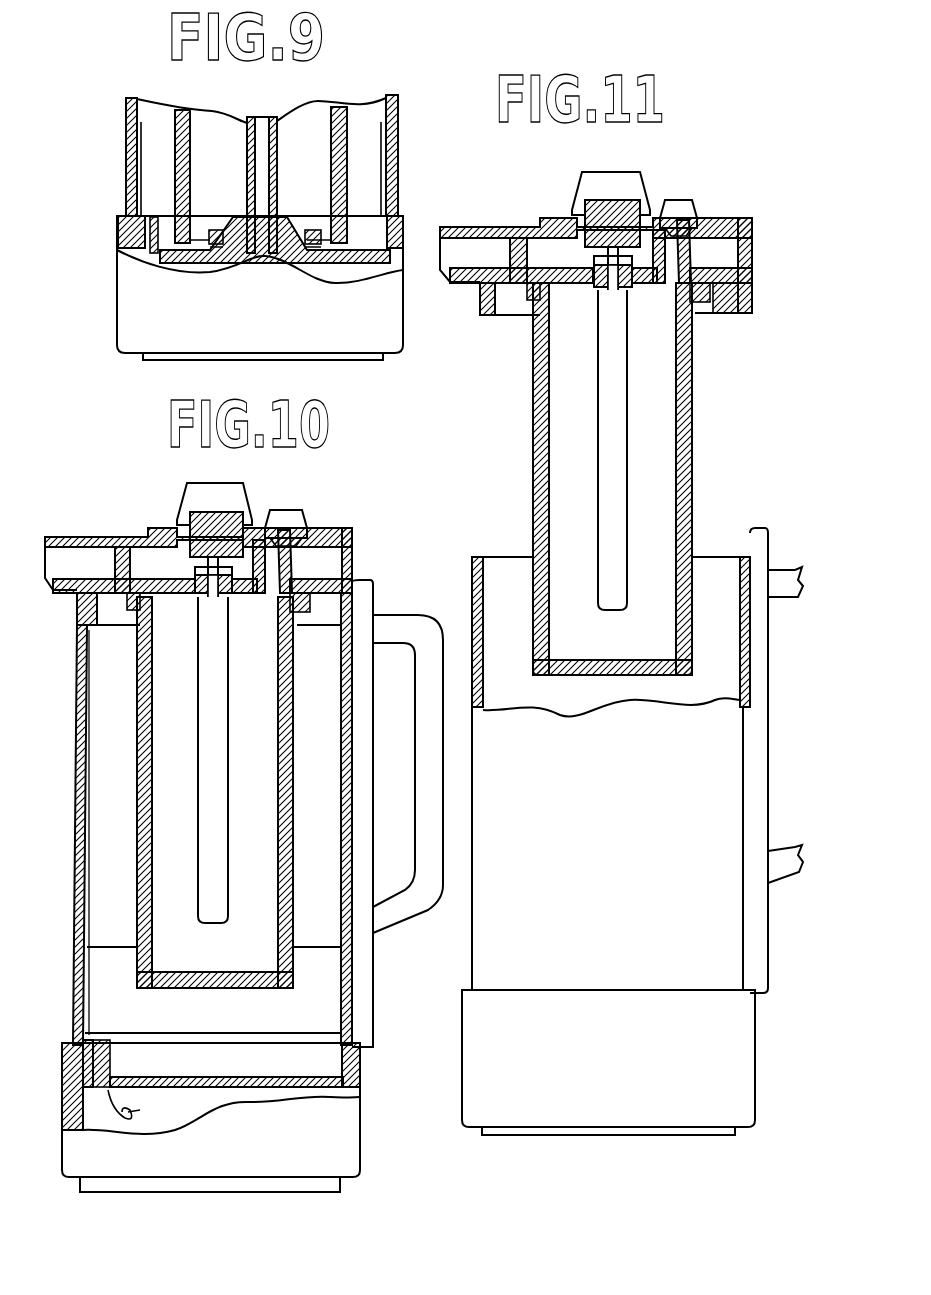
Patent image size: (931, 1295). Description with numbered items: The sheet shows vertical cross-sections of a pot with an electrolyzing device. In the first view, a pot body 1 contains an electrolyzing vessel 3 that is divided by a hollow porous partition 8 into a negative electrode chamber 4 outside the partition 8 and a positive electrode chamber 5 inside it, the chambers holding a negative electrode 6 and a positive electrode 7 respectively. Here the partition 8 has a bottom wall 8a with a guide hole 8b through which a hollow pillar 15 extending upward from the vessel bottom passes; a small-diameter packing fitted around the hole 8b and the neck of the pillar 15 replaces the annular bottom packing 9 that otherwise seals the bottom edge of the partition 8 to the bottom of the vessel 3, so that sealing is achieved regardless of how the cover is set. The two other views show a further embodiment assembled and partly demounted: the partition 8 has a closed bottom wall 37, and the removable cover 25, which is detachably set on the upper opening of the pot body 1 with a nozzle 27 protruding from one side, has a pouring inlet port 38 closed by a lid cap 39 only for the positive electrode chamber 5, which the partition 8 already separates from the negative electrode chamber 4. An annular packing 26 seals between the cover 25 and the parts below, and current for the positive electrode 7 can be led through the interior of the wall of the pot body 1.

In FIG. 9, the pot body 1 is at (127, 152).
In FIG. 10, the pot body 1 is at (78, 812).
In FIG. 11, the pot body 1 is at (750, 670).
In FIG. 10, the electrolyzing vessel 3 is at (331, 727).
In FIG. 11, the electrolyzing vessel 3 is at (728, 455).
In FIG. 10, the negative electrode chamber 4 is at (327, 833).
In FIG. 10, the positive electrode chamber 5 is at (259, 833).
In FIG. 11, the positive electrode chamber 5 is at (584, 478).
In FIG. 9, the negative electrode 6 is at (142, 184).
In FIG. 10, the negative electrode 6 is at (87, 992).
In FIG. 10, the positive electrode 7 is at (205, 613).
In FIG. 11, the positive electrode 7 is at (618, 297).
In FIG. 9, the porous partition 8 is at (347, 152).
In FIG. 10, the porous partition 8 is at (140, 787).
In FIG. 11, the porous partition 8 is at (533, 485).
In FIG. 9, the bottom wall 8a is at (336, 245).
In FIG. 9, the guide hole 8b is at (316, 232).
In FIG. 9, the annular bottom packing 9 is at (296, 243).
In FIG. 9, the hollow pillar 15 is at (252, 156).
In FIG. 10, the cover 25 is at (346, 510).
In FIG. 11, the cover 25 is at (710, 173).
In FIG. 10, the annular packing 26 is at (80, 600).
In FIG. 11, the annular packing 26 is at (487, 298).
In FIG. 10, the nozzle 27 is at (62, 592).
In FIG. 11, the nozzle 27 is at (462, 285).
In FIG. 10, the closed bottom wall 37 is at (208, 990).
In FIG. 10, the pouring inlet port 38 is at (291, 563).
In FIG. 11, the pouring inlet port 38 is at (690, 253).
In FIG. 10, the lid cap 39 is at (287, 512).
In FIG. 11, the lid cap 39 is at (675, 202).